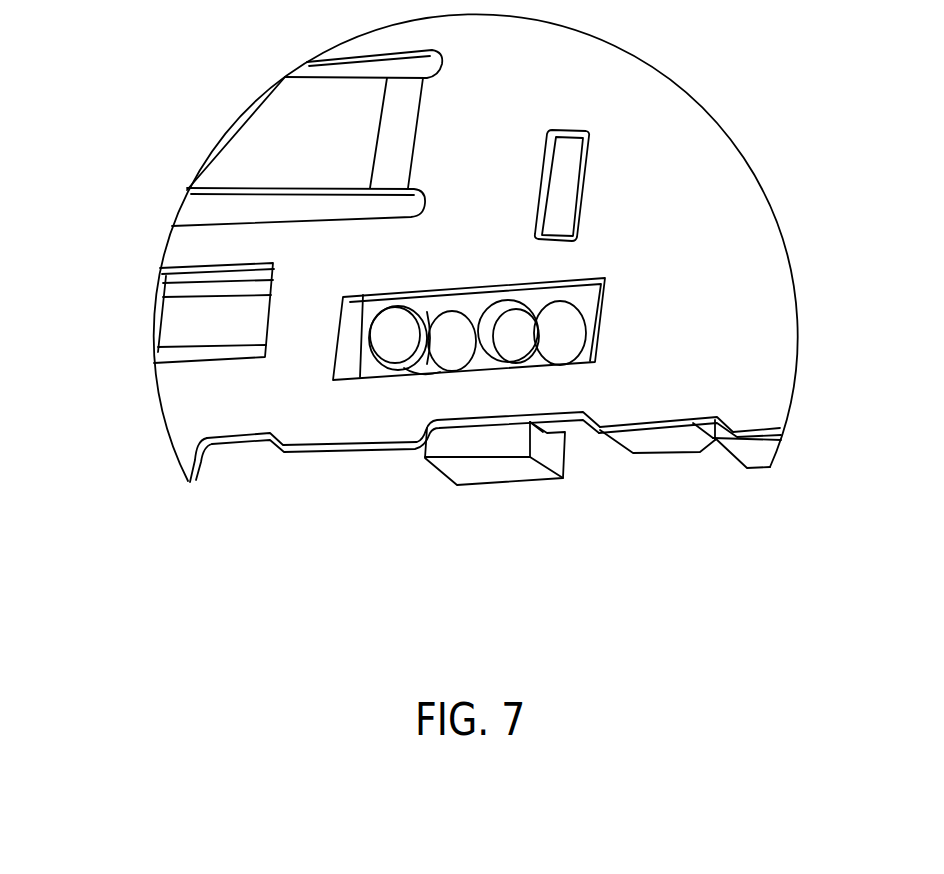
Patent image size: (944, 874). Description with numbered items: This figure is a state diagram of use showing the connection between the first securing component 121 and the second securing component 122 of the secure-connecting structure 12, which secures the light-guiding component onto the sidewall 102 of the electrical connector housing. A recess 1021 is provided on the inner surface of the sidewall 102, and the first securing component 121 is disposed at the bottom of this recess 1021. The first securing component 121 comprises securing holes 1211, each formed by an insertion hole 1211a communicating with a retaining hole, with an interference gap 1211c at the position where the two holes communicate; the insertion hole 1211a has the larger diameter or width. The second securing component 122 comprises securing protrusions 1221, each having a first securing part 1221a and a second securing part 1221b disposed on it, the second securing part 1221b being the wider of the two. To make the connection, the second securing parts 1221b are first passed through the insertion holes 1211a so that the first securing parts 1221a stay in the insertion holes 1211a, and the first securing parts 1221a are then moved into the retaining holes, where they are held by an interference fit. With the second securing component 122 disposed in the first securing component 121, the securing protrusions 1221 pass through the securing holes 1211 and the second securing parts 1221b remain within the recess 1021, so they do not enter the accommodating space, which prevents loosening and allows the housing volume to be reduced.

The sidewall 102 is at (675, 150).
The recess 1021 is at (600, 367).
The secure-connecting structure 12 is at (603, 313).
The first securing component 121 is at (376, 312).
The securing hole 1211 is at (413, 373).
The insertion hole 1211a is at (470, 347).
The interference gap 1211c is at (424, 318).
The second securing component 122 is at (473, 302).
The securing protrusion 1221 is at (372, 370).
The first securing part 1221a is at (427, 370).
The second securing part 1221b is at (393, 337).